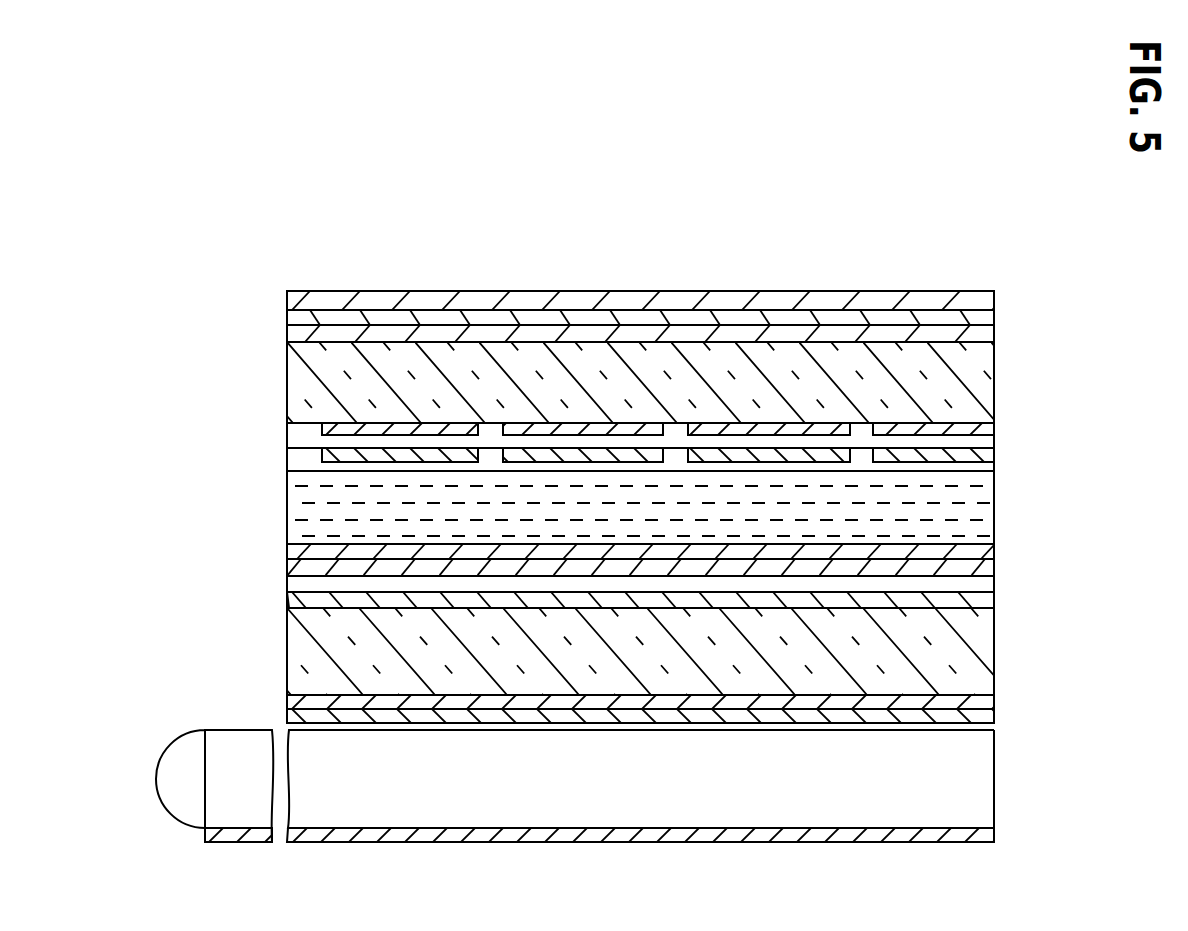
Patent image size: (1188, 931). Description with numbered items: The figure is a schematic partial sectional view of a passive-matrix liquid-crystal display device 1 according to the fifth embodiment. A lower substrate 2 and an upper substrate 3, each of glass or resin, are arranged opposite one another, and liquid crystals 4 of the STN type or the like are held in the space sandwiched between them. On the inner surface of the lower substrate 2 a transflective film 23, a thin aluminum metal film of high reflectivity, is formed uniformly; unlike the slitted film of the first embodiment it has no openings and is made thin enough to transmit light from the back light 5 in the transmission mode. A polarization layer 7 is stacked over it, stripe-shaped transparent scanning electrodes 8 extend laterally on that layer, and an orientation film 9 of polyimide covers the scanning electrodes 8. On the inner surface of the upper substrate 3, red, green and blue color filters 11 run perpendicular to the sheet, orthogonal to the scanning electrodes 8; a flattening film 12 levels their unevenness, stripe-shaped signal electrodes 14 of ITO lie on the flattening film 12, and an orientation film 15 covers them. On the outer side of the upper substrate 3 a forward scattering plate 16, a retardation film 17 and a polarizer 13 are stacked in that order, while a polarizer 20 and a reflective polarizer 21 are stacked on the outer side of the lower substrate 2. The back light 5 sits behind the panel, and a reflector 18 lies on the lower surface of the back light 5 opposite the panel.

The liquid-crystal display device 1 is at (948, 290).
The lower substrate 2 is at (980, 655).
The upper substrate 3 is at (978, 391).
The liquid crystals 4 is at (977, 508).
The back light 5 is at (980, 782).
The polarization layer 7 is at (983, 583).
The scanning electrodes 8 is at (983, 563).
The orientation film 9 is at (982, 548).
The color filters 11 is at (412, 428).
The flattening film 12 is at (983, 440).
The polarizer 13 is at (994, 300).
The signal electrodes 14 is at (356, 452).
The orientation film 15 is at (985, 468).
The forward scattering plate 16 is at (994, 335).
The retardation film 17 is at (994, 316).
The reflector 18 is at (975, 838).
The polarizer 20 is at (980, 700).
The reflective polarizer 21 is at (980, 713).
The transflective film 23 is at (288, 603).